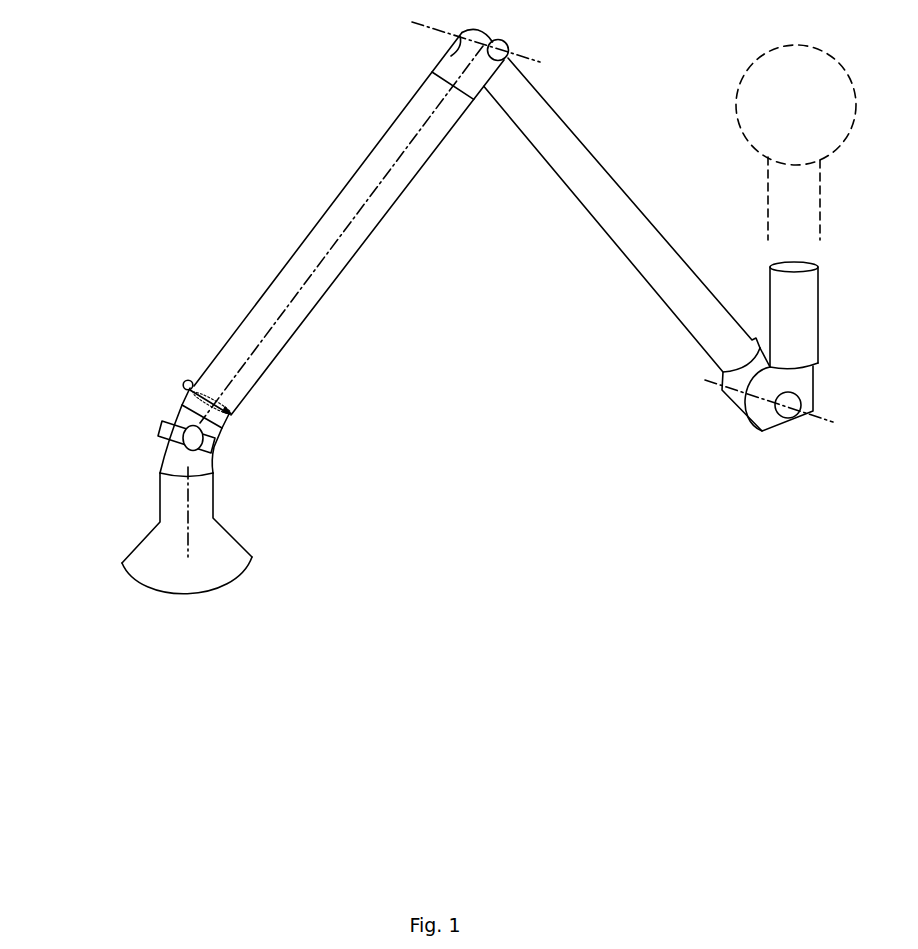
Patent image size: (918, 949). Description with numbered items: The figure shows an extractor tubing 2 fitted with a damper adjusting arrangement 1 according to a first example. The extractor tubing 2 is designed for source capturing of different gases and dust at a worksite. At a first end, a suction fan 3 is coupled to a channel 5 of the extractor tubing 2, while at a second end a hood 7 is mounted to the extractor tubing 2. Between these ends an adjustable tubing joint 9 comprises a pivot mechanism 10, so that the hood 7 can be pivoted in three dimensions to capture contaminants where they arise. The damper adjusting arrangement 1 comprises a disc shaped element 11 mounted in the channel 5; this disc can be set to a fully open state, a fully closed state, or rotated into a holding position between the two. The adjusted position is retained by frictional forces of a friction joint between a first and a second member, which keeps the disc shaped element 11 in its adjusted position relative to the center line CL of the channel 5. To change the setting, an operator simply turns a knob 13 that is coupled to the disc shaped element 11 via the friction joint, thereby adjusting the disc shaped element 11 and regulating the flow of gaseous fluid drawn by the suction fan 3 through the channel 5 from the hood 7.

The damper adjusting arrangement 1 is at (162, 354).
The extractor tubing 2 is at (549, 366).
The suction fan 3 is at (747, 75).
The channel 5 is at (237, 393).
The hood 7 is at (90, 572).
The adjustable tubing joint 9 is at (252, 453).
The pivot mechanism 10 is at (167, 433).
The disc shaped element 11 is at (213, 387).
The knob 13 is at (182, 385).
The center line CL is at (336, 238).